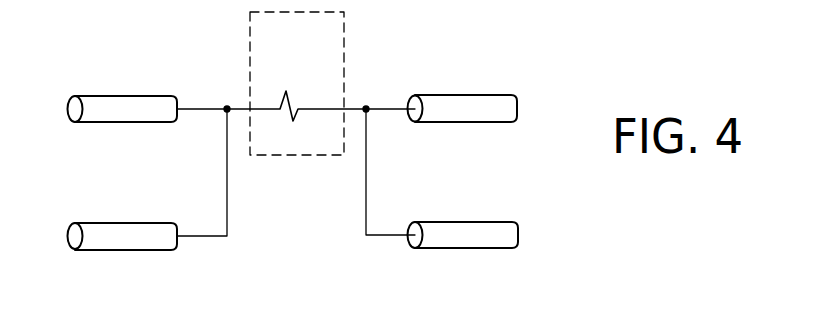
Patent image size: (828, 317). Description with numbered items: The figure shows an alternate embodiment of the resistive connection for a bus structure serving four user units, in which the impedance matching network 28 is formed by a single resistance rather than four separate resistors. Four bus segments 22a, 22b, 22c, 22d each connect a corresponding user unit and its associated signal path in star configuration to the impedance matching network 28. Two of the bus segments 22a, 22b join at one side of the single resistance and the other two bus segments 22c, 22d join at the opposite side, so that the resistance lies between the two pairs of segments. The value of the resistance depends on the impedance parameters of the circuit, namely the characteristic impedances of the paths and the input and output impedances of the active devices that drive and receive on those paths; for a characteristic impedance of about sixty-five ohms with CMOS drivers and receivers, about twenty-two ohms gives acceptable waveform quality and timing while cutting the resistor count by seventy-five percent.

The bus segment 22a is at (125, 222).
The bus segment 22b is at (122, 95).
The bus segment 22c is at (448, 95).
The bus segment 22d is at (448, 222).
The impedance matching network 28 is at (344, 20).